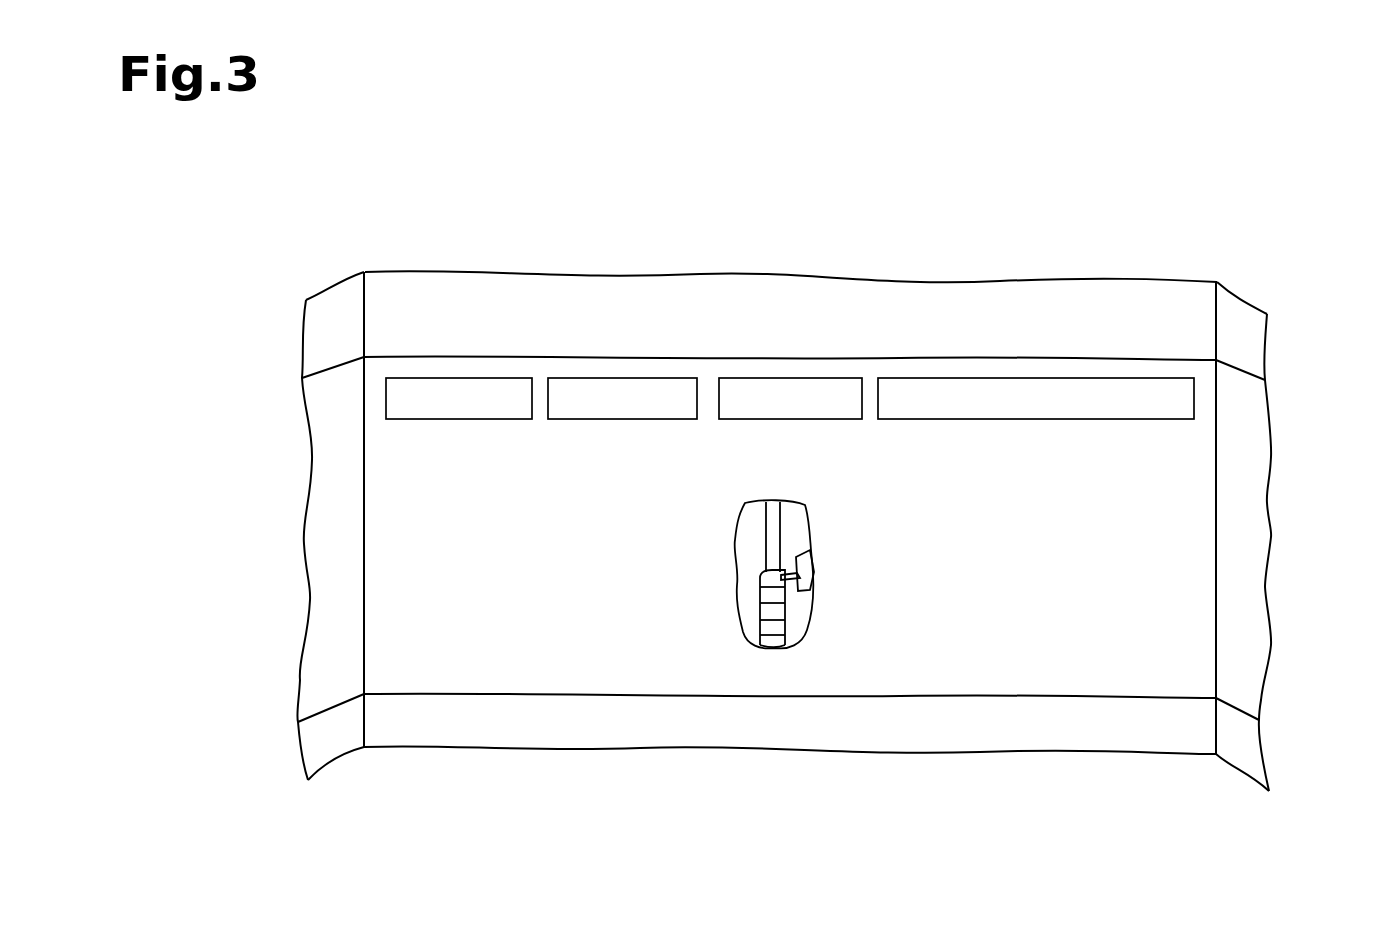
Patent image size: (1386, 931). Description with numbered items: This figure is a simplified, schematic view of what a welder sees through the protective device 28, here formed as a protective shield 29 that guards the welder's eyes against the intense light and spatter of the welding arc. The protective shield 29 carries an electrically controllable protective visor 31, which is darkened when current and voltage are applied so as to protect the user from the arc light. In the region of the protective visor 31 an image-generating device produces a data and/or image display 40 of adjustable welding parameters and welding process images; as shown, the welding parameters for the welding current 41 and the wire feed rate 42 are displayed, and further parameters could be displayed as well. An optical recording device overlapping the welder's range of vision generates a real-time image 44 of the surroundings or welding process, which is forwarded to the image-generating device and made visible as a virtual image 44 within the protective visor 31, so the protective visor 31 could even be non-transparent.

The protective device 28 is at (292, 247).
The protective shield 29 is at (893, 327).
The protective visor 31 is at (1133, 562).
The data and/or image display 40 is at (1096, 292).
The welding current 41 is at (625, 306).
The wire feed rate 42 is at (787, 312).
The image 44 is at (713, 632).